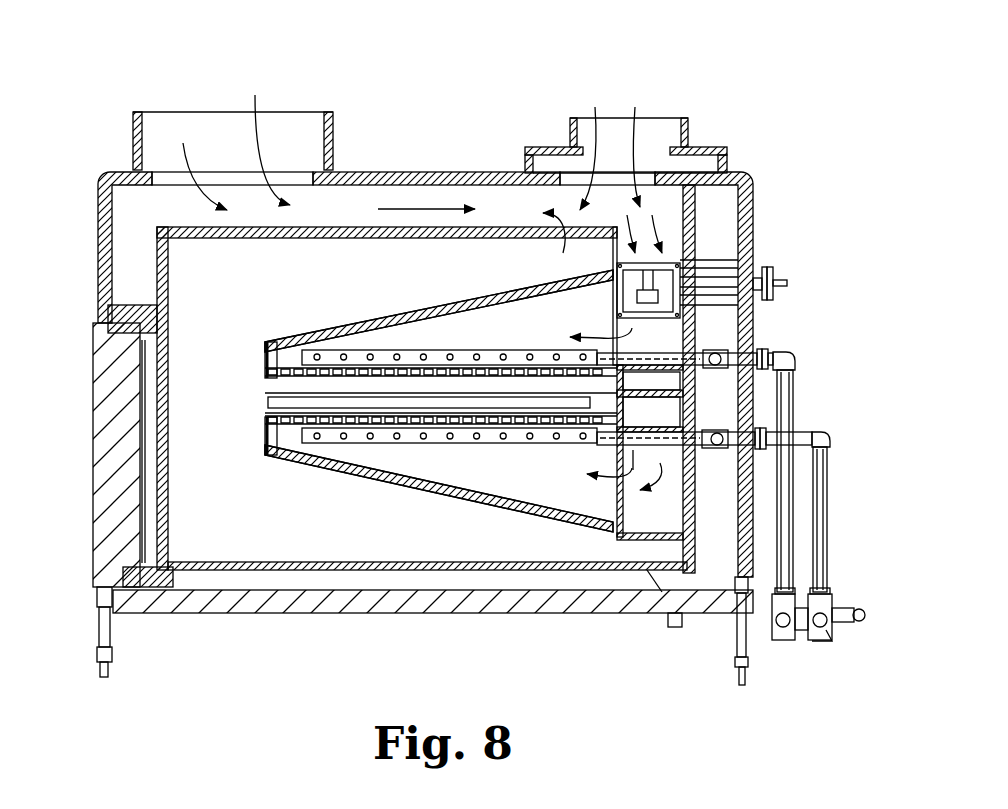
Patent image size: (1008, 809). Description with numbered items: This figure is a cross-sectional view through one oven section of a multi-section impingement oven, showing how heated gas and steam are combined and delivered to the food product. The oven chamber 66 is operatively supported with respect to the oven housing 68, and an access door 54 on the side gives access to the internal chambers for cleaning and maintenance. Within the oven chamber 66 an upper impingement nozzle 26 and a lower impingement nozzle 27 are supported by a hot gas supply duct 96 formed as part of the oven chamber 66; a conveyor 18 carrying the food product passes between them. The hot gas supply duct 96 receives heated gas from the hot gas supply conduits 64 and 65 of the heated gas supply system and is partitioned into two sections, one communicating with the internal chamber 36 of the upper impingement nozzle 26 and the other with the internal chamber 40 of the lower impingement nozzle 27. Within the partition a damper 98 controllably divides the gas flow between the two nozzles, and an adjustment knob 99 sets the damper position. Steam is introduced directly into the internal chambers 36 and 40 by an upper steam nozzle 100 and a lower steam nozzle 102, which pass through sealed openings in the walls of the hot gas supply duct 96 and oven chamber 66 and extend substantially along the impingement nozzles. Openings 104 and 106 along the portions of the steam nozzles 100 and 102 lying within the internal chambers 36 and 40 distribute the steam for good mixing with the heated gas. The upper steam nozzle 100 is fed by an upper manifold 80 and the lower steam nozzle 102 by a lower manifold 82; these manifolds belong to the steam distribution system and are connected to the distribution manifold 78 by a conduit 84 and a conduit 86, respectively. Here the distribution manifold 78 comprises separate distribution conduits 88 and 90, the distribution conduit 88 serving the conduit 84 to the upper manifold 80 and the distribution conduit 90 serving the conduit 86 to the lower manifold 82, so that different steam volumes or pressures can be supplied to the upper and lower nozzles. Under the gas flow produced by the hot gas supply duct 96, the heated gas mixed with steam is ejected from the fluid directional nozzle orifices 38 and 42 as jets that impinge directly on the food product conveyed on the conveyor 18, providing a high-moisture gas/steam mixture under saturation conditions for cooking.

The conveyor 18 is at (267, 396).
The upper impingement nozzle 26 is at (303, 337).
The lower impingement nozzle 27 is at (323, 460).
The internal chamber of upper impingement nozzle 36 is at (430, 320).
The fluid directional nozzle orifices 38 is at (303, 380).
The internal chamber of lower impingement nozzle 40 is at (462, 481).
The fluid directional nozzle orifices 42 is at (267, 413).
The access door 54 is at (95, 472).
The hot gas supply conduit 64 is at (625, 103).
The hot gas supply conduit 65 is at (223, 101).
The oven chamber 66 is at (317, 572).
The oven housing 68 is at (751, 226).
The distribution manifold 78 is at (790, 654).
The upper manifold 80 is at (713, 352).
The lower manifold 82 is at (715, 448).
The conduit 84 is at (787, 530).
The conduit 86 is at (827, 484).
The distribution conduit 88 is at (776, 627).
The distribution conduit 90 is at (828, 628).
The hot gas supply duct 96 is at (563, 253).
The damper 98 is at (665, 303).
The adjustment knob 99 is at (768, 267).
The upper steam nozzle 100 is at (497, 348).
The lower steam nozzle 102 is at (513, 444).
The openings 104 is at (400, 352).
The openings 106 is at (373, 444).